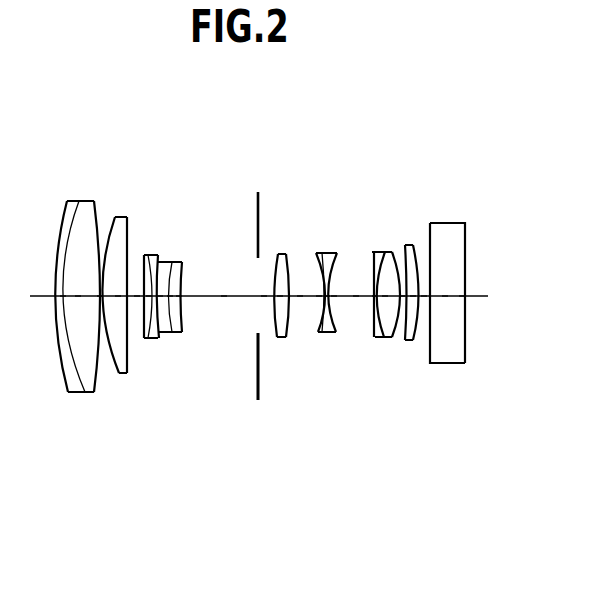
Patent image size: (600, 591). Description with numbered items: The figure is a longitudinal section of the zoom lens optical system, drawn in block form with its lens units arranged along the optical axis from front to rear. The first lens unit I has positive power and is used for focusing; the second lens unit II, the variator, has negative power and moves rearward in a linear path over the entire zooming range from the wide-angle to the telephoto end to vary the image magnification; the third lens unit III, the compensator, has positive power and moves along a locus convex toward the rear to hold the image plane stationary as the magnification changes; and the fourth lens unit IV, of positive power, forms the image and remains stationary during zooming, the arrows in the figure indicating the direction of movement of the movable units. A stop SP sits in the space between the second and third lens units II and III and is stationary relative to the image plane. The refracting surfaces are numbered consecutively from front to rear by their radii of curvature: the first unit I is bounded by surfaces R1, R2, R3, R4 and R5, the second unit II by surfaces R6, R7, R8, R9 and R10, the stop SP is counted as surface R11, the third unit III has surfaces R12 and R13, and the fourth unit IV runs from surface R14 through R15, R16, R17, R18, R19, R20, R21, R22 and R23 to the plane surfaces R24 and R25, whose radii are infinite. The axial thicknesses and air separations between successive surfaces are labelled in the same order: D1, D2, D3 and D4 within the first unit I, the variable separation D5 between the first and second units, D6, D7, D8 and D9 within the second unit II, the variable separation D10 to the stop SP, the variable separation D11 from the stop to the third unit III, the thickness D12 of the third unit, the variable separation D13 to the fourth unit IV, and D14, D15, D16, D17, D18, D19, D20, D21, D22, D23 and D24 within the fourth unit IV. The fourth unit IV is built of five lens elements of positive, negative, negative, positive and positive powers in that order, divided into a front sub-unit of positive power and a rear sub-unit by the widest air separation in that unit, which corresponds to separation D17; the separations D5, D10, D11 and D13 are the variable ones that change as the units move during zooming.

The first lens unit I is at (143, 110).
The second lens unit II is at (213, 110).
The third lens unit III is at (305, 110).
The fourth lens unit IV is at (427, 110).
The stop SP is at (258, 200).
The axial thickness D1 is at (63, 296).
The axial thickness D2 is at (78, 296).
The air separation D3 is at (100, 296).
The axial thickness D4 is at (118, 296).
The variable air separation D5 is at (137, 296).
The axial thickness D6 is at (149, 296).
The air separation D7 is at (160, 296).
The axial thickness D8 is at (170, 296).
The axial thickness D9 is at (179, 296).
The variable air separation D10 is at (224, 296).
The variable air separation D11 is at (264, 296).
The axial thickness D12 is at (280, 296).
The variable air separation D13 is at (300, 296).
The axial thickness D14 is at (318, 253).
The air separation D15 is at (327, 253).
The axial thickness D16 is at (334, 253).
The air separation D17 is at (356, 296).
The axial thickness D18 is at (375, 252).
The air separation D19 is at (385, 252).
The axial thickness D20 is at (402, 250).
The air separation D21 is at (413, 248).
The axial thickness D22 is at (424, 296).
The air separation D23 is at (445, 296).
The axial thickness D24 is at (462, 296).
The radius of curvature R1 is at (68, 390).
The radius of curvature R2 is at (77, 393).
The radius of curvature R3 is at (98, 393).
The radius of curvature R4 is at (118, 372).
The radius of curvature R5 is at (113, 380).
The radius of curvature R6 is at (135, 337).
The radius of curvature R7 is at (152, 338).
The radius of curvature R8 is at (163, 333).
The radius of curvature R9 is at (170, 333).
The radius of curvature R10 is at (190, 333).
The stop surface R11 is at (257, 390).
The radius of curvature R12 is at (267, 335).
The radius of curvature R13 is at (293, 335).
The radius of curvature R14 is at (312, 333).
The radius of curvature R15 is at (333, 333).
The radius of curvature R16 is at (353, 333).
The radius of curvature R17 is at (368, 335).
The radius of curvature R18 is at (390, 335).
The radius of curvature R19 is at (398, 338).
The radius of curvature R20 is at (408, 340).
The radius of curvature R21 is at (415, 340).
The radius of curvature R22 is at (432, 362).
The radius of curvature R23 is at (458, 340).
The radius of curvature R24 is at (468, 338).
The radius of curvature R25 is at (483, 338).